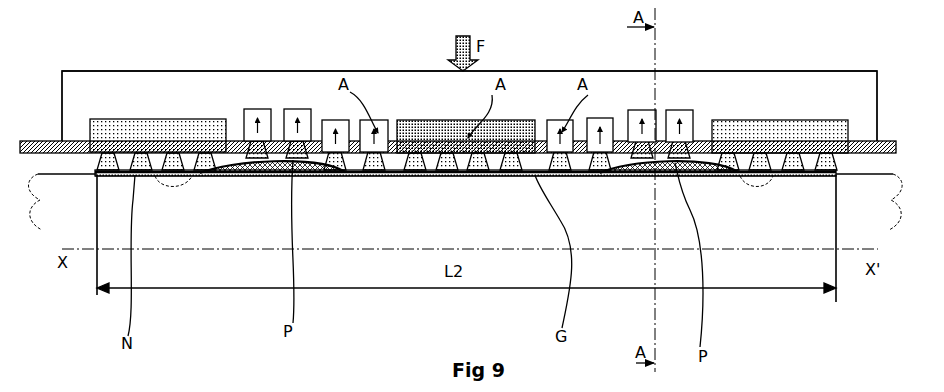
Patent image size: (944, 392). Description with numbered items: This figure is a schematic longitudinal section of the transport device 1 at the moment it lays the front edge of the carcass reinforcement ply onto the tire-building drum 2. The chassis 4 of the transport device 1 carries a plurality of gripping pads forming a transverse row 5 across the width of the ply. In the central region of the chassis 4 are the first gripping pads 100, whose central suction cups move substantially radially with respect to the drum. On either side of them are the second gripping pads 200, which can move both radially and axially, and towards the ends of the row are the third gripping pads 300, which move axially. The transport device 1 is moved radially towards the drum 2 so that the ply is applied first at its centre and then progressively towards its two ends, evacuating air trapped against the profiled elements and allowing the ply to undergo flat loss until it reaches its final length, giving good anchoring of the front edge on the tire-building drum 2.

The transport device 1 is at (812, 55).
The tire-building drum 2 is at (783, 208).
The chassis 4 is at (708, 83).
The transverse row 5 is at (80, 163).
The first gripping pads 100 is at (417, 108).
The second gripping pads 200 is at (290, 100).
The third gripping pads 300 is at (128, 106).